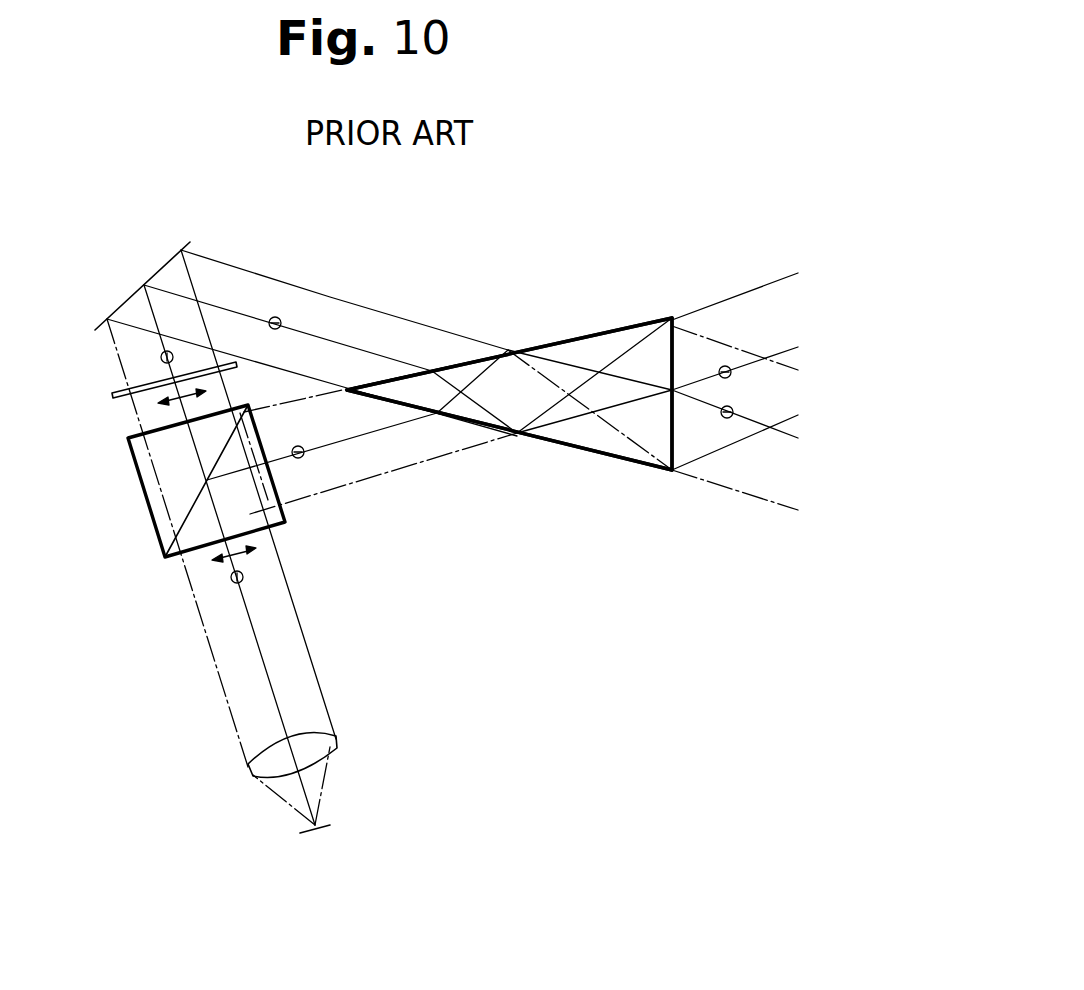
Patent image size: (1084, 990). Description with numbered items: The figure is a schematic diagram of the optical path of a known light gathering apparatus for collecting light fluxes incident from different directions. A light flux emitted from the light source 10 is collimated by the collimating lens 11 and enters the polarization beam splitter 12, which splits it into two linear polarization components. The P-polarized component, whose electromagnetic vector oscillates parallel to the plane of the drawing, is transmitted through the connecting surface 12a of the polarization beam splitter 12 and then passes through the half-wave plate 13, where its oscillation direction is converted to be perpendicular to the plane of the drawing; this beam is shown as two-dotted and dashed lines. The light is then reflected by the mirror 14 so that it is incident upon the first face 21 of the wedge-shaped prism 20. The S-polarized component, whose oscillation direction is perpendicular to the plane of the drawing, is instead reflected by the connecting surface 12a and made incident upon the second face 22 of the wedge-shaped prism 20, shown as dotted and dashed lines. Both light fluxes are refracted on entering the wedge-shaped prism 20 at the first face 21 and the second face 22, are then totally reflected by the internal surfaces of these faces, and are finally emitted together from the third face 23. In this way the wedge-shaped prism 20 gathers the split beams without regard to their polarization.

The light source 10 is at (330, 827).
The collimating lens 11 is at (334, 737).
The polarization beam splitter 12 is at (143, 493).
The connecting surface 12a is at (190, 513).
The λ/2 plate 13 is at (113, 400).
The mirror 14 is at (152, 273).
The wedge-shaped prism 20 is at (593, 322).
The first face 21 is at (533, 347).
The second face 22 is at (575, 447).
The third face 23 is at (675, 446).